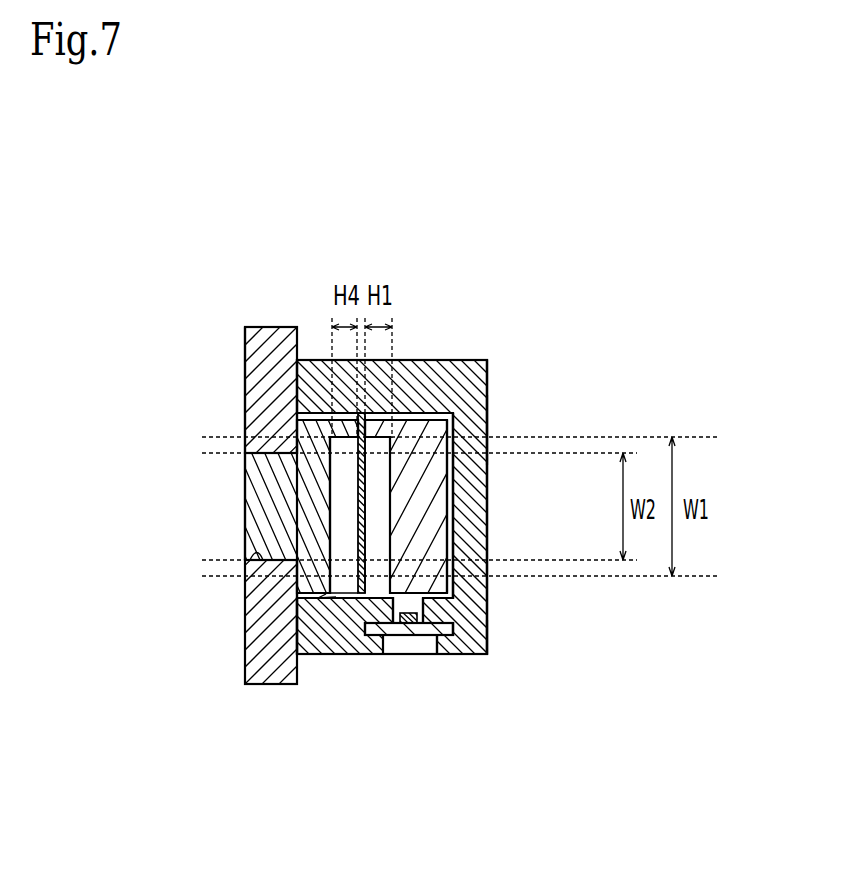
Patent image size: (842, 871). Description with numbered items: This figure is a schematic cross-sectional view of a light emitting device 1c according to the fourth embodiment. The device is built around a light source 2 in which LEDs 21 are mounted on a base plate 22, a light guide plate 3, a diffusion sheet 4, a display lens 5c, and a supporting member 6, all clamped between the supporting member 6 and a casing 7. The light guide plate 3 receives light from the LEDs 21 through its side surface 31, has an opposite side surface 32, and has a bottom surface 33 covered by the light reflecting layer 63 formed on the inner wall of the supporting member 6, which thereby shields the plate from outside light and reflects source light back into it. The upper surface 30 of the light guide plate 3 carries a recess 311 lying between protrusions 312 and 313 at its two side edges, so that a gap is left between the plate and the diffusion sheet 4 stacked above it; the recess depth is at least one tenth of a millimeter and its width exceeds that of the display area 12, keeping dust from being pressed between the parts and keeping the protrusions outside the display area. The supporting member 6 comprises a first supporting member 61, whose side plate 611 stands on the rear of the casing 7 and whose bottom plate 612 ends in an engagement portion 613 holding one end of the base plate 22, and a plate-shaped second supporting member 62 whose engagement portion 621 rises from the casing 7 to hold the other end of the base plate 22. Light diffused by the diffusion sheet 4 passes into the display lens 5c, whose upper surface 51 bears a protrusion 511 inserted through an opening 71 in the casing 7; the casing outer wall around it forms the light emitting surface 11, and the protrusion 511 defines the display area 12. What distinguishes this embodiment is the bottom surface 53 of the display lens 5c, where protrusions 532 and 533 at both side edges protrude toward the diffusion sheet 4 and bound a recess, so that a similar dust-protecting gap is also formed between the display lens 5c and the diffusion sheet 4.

The light emitting device 1c is at (491, 271).
The light source 2 is at (405, 636).
The LED 21 is at (412, 618).
The base plate 22 is at (387, 636).
The light guide plate 3 is at (453, 425).
The upper surface 30 is at (388, 440).
The side surface 31 is at (488, 619).
The recess 311 is at (445, 484).
The protrusion 312 is at (387, 425).
The protrusion 313 is at (352, 600).
The side surface 32 is at (482, 360).
The bottom surface 33 is at (445, 520).
The diffusion sheet 4 is at (345, 600).
The display lens 5c is at (255, 472).
The upper surface 51 is at (268, 480).
The protrusion 511 is at (243, 522).
The display area 12 is at (222, 543).
The bottom surface 53 is at (335, 512).
The protrusion 532 is at (333, 598).
The protrusion 533 is at (348, 427).
The supporting member 6 is at (427, 778).
The first supporting member 61 is at (478, 654).
The side plate 611 is at (333, 412).
The bottom plate 612 is at (485, 427).
The engagement portion 613 is at (487, 648).
The second supporting member 62 is at (357, 653).
The engagement portion 621 is at (362, 612).
The light reflecting layer 63 is at (452, 545).
The casing 7 is at (245, 337).
The opening 71 is at (243, 577).
The light emitting surface 11 is at (245, 383).